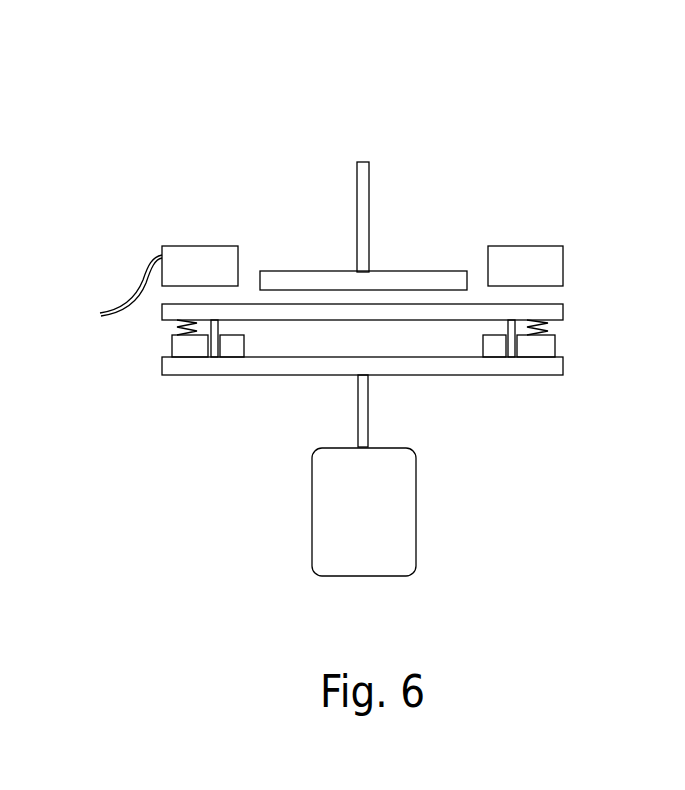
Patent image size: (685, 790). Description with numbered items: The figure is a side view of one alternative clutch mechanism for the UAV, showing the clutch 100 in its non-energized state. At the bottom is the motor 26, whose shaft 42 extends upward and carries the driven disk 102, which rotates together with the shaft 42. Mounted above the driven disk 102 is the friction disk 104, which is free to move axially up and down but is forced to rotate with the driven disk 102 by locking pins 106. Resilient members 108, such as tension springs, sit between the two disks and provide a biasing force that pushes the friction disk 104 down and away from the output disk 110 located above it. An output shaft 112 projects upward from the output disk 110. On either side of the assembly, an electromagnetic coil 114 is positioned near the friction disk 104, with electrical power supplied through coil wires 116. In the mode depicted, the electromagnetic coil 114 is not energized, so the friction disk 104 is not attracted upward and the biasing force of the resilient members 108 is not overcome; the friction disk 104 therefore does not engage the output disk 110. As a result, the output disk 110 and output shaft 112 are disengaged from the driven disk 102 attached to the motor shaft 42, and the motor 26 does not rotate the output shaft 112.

The clutch 100 is at (108, 78).
The driven disk 102 is at (222, 375).
The friction disk 104 is at (505, 301).
The locking pins 106 is at (218, 328).
The resilient members 108 is at (178, 326).
The output disk 110 is at (398, 270).
The output shaft 112 is at (369, 205).
The electromagnetic coil 114 is at (197, 246).
The coil wires 116 is at (128, 290).
The shaft 42 is at (368, 396).
The motor 26 is at (416, 490).